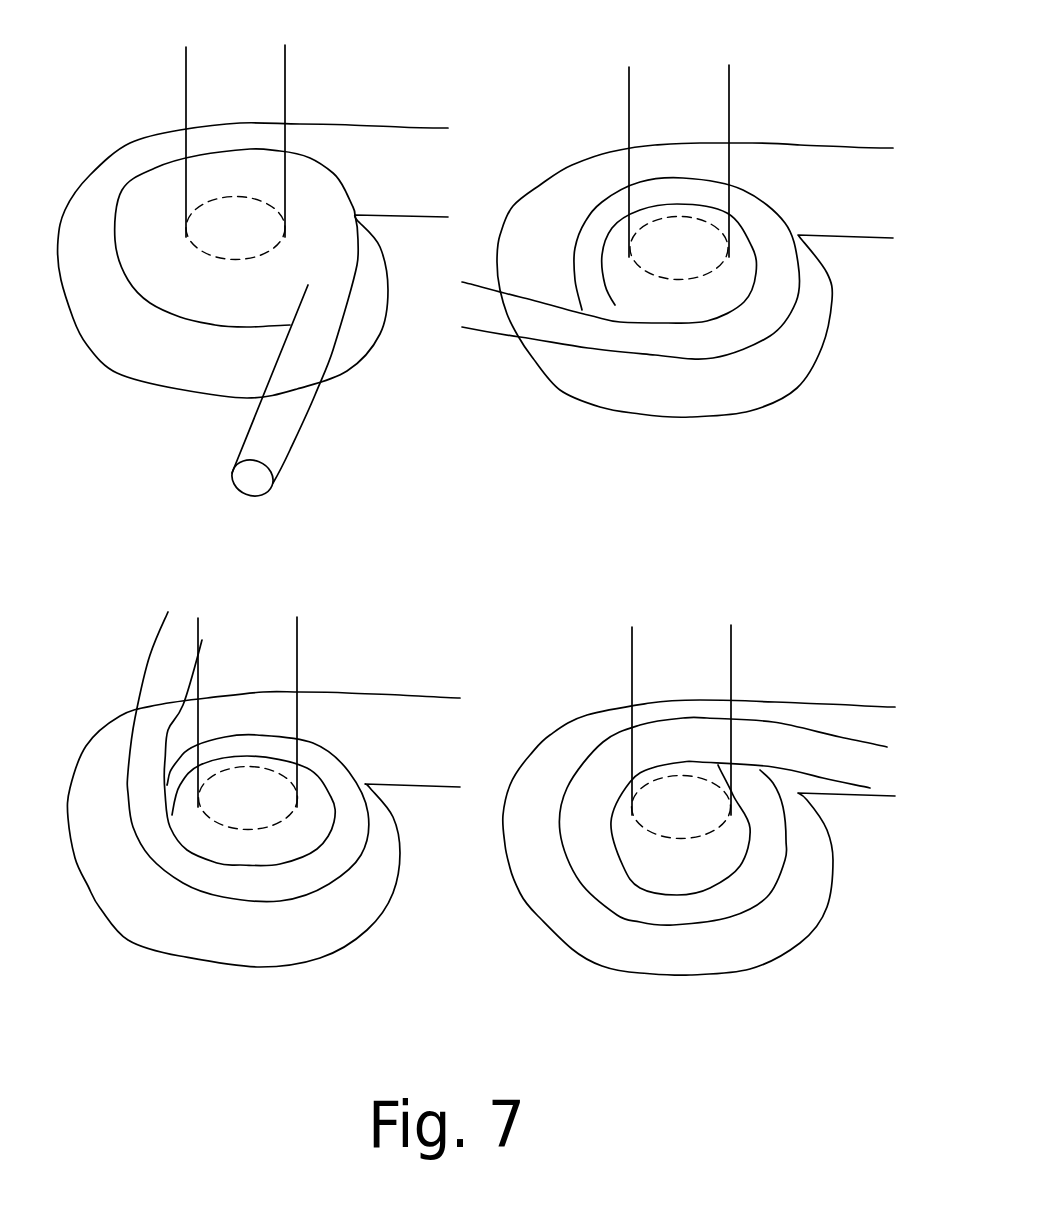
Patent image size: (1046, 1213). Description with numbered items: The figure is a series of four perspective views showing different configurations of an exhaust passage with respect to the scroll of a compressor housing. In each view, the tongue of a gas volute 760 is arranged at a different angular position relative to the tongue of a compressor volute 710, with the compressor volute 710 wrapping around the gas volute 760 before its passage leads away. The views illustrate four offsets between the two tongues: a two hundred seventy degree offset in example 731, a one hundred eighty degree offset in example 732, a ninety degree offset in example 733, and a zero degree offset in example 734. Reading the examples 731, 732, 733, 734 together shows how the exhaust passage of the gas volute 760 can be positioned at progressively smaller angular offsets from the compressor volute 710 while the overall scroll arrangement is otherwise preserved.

The compressor volute 710 is at (476, 548).
The gas volute 760 is at (168, 197).
The example 731 is at (203, 431).
The example 732 is at (603, 427).
The example 733 is at (213, 989).
The example 734 is at (597, 989).